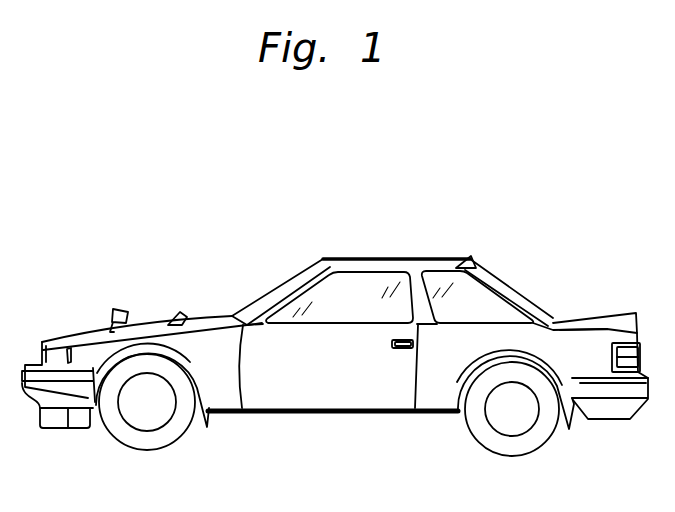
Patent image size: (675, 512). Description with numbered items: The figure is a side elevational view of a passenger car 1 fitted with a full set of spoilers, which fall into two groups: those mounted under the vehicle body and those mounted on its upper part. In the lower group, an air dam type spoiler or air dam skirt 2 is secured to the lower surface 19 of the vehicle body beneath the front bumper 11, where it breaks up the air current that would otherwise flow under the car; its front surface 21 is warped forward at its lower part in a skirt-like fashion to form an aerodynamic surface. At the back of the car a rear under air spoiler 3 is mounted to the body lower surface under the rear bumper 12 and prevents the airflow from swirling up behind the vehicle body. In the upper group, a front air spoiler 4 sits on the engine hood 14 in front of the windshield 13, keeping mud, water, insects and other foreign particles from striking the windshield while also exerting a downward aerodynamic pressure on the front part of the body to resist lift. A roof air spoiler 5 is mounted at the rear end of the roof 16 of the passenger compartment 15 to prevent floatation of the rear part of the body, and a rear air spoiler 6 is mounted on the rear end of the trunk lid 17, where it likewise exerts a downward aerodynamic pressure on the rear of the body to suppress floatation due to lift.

The passenger car 1 is at (353, 245).
The air dam skirt 2 is at (50, 429).
The rear under air spoiler 3 is at (605, 420).
The front air spoiler 4 is at (178, 312).
The roof air spoiler 5 is at (474, 257).
The rear air spoiler 6 is at (637, 312).
The front bumper 11 is at (21, 371).
The rear bumper 12 is at (650, 399).
The windshield 13 is at (283, 285).
The engine hood 14 is at (214, 323).
The passenger compartment 15 is at (338, 306).
The roof 16 is at (383, 259).
The trunk lid 17 is at (573, 322).
The lower surface 19 is at (70, 428).
The front surface 21 is at (36, 413).